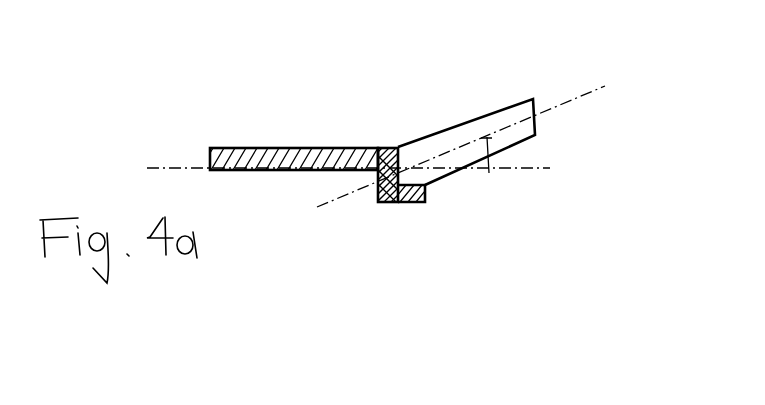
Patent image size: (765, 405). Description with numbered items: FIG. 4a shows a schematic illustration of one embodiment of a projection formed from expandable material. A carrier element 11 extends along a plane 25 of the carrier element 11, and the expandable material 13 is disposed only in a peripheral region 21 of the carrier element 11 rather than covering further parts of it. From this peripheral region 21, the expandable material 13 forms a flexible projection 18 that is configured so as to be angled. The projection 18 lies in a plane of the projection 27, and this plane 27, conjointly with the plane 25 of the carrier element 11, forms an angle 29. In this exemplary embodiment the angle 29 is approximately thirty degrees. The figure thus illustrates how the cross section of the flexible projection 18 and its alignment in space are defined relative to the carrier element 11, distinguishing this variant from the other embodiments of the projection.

The carrier element 11 is at (228, 172).
The expandable material 13 is at (403, 147).
The flexible projection 18 is at (508, 107).
The peripheral region 21 is at (395, 202).
The plane of the carrier element 25 is at (153, 166).
The plane of the projection 27 is at (590, 93).
The angle 29 is at (493, 158).